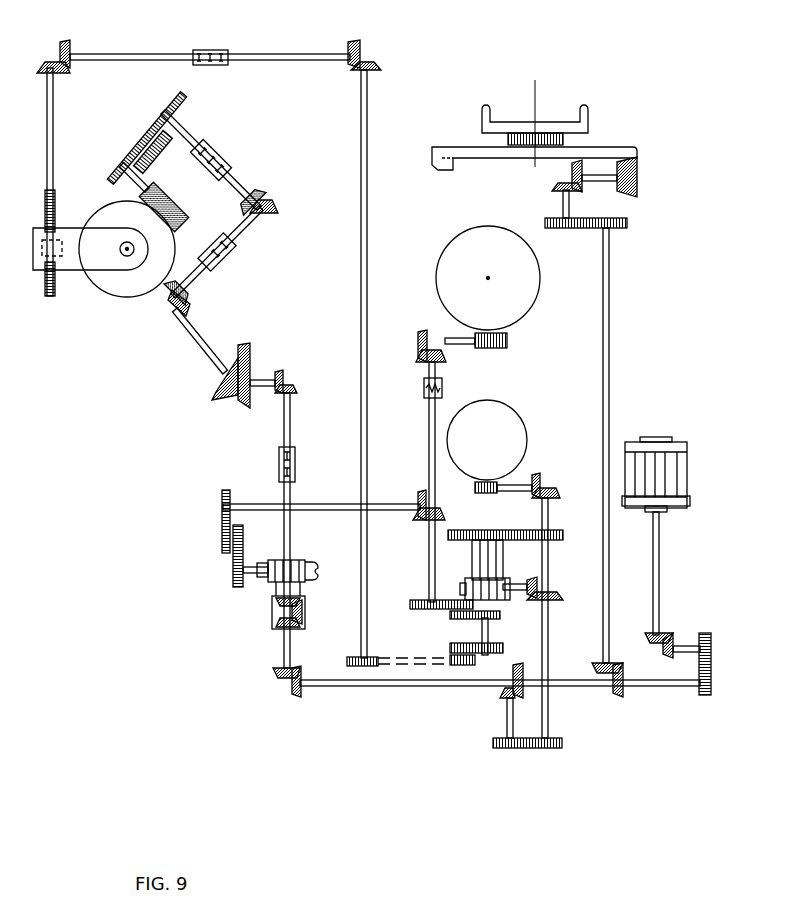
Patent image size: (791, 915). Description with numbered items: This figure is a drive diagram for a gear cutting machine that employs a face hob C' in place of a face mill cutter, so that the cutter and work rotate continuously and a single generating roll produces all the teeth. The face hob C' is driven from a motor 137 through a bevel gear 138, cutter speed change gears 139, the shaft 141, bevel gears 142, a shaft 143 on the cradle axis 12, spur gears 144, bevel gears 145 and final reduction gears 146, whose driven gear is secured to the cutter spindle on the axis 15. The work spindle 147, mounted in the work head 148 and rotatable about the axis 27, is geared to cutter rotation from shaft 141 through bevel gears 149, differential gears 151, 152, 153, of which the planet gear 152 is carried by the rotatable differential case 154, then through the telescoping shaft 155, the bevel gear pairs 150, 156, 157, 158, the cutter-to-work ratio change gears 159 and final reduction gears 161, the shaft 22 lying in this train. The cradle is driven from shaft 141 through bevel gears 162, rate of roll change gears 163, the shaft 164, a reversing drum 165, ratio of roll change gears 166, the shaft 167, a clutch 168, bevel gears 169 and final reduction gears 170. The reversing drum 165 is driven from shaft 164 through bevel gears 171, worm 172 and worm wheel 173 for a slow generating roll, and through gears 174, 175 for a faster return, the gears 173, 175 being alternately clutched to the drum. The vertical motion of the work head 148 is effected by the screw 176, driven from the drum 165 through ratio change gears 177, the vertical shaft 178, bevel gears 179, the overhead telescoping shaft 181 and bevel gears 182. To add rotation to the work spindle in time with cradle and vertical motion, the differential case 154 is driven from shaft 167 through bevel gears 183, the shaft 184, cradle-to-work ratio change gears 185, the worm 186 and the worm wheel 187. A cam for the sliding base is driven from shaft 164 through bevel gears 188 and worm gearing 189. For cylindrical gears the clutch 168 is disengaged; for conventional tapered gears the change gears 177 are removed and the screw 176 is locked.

The cradle axis 12 is at (490, 277).
The cutter spindle axis 15 is at (537, 96).
The shaft 22 is at (300, 384).
The work spindle axis 27 is at (127, 258).
The face hob C' is at (553, 120).
The motor 137 is at (675, 478).
The bevel gear 138 is at (665, 640).
The cutter speed change gears 139 is at (712, 660).
The shaft 141 is at (640, 687).
The bevel gears 142 is at (605, 688).
The shaft 143 is at (610, 372).
The spur gears 144 is at (572, 229).
The bevel gears 145 is at (560, 186).
The final reduction gears 146 is at (642, 178).
The work spindle 147 is at (140, 248).
The work head 148 is at (75, 265).
The bevel gears 149 is at (292, 690).
The bevel gear pair 150 is at (290, 384).
The differential gear 151 is at (276, 622).
The planet gear 152 is at (302, 604).
The differential gear 153 is at (273, 604).
The differential case 154 is at (302, 615).
The telescoping shaft 155 is at (291, 446).
The bevel gear pair 156 is at (246, 360).
The bevel gear pair 157 is at (185, 306).
The bevel gear pair 158 is at (264, 200).
The cutter-to-work ratio change gears 159 is at (150, 128).
The final reduction gears 161 is at (145, 190).
The bevel gears 162 is at (505, 686).
The rate of roll change gears 163 is at (545, 750).
The shaft 164 is at (545, 556).
The reversing drum 165 is at (505, 580).
The ratio of roll change gears 166 is at (470, 620).
The shaft 167 is at (430, 462).
The clutch 168 is at (424, 389).
The bevel gears 169 is at (420, 347).
The final reduction gears 170 is at (508, 341).
The bevel gears 171 is at (527, 590).
The worm 172 is at (475, 580).
The worm wheel 173 is at (462, 590).
The gear 174 is at (522, 530).
The gear 175 is at (482, 540).
The screw 176 is at (48, 160).
The ratio change gears 177 is at (455, 668).
The vertical shaft 178 is at (370, 252).
The bevel gears 179 is at (366, 54).
The overhead telescoping shaft 181 is at (250, 55).
The bevel gears 182 is at (58, 54).
The bevel gears 183 is at (420, 515).
The shaft 184 is at (310, 503).
The cradle-to-work ratio change gears 185 is at (233, 565).
The worm 186 is at (292, 560).
The worm wheel 187 is at (313, 575).
The bevel gears 188 is at (548, 483).
The worm gearing 189 is at (495, 478).